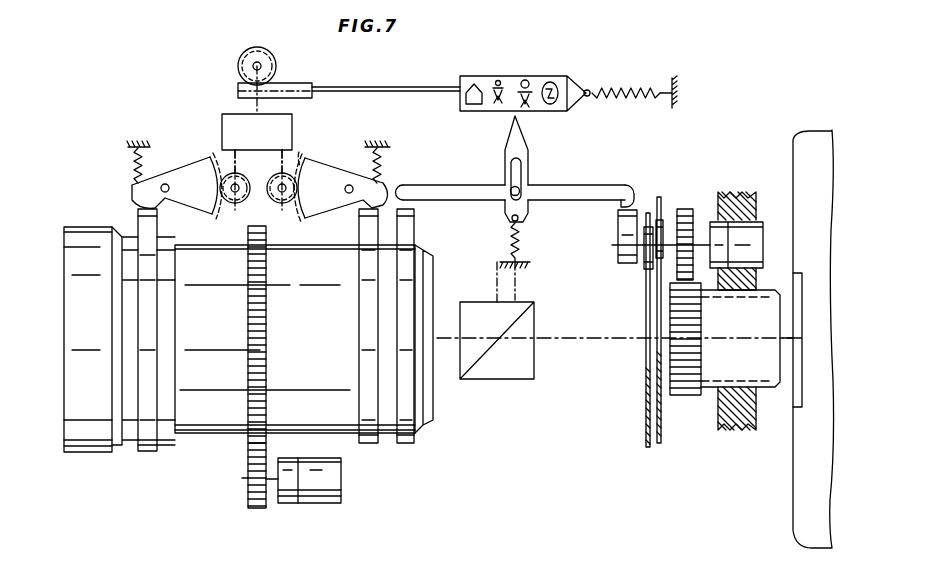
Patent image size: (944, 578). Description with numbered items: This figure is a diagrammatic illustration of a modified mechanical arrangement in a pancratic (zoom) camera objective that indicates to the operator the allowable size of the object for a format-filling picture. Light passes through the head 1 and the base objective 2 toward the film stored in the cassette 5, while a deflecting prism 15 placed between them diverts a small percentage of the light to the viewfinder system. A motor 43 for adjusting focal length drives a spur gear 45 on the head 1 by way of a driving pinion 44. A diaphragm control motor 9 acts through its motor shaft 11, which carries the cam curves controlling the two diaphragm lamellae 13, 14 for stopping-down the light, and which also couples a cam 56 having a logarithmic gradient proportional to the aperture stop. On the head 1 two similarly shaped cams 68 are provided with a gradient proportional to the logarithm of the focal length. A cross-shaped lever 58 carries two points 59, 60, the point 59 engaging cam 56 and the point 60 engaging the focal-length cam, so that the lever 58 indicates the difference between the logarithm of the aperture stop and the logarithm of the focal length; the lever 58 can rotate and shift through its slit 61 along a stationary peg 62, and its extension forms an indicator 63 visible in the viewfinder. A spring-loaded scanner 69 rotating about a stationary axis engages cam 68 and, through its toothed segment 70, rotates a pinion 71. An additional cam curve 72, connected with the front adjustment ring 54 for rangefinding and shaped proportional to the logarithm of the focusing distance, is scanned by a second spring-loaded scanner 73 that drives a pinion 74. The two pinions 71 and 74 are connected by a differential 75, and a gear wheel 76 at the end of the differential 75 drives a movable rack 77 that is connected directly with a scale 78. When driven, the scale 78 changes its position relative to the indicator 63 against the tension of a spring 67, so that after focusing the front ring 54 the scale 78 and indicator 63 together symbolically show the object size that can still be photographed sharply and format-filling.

The head 1 is at (199, 400).
The base objective 2 is at (722, 362).
The cassette 5 is at (815, 522).
The diaphragm control motor 9 is at (760, 246).
The motor shaft 11 is at (701, 222).
The diaphragm lamella 13 is at (647, 447).
The diaphragm lamella 14 is at (660, 442).
The deflecting prism 15 is at (503, 364).
The motor 43 is at (317, 488).
The driving pinion 44 is at (262, 509).
The spur gear 45 is at (258, 412).
The front adjustment ring 54 is at (87, 255).
The cam 56 is at (627, 255).
The cross-shaped lever 58 is at (494, 190).
The point 59 is at (627, 190).
The point 60 is at (407, 196).
The slit 61 is at (521, 165).
The stationary peg 62 is at (520, 198).
The indicator 63 is at (511, 127).
The spring 67 is at (628, 90).
The cam 68 is at (405, 444).
The spring-loaded scanner 69 is at (331, 180).
The toothed segment 70 is at (301, 160).
The pinion 71 is at (283, 204).
The cam curve 72 is at (150, 438).
The spring-loaded scanner 73 is at (185, 179).
The pinion 74 is at (235, 204).
The differential 75 is at (242, 130).
The gear wheel 76 is at (247, 67).
The movable rack 77 is at (294, 88).
The scale 78 is at (516, 82).